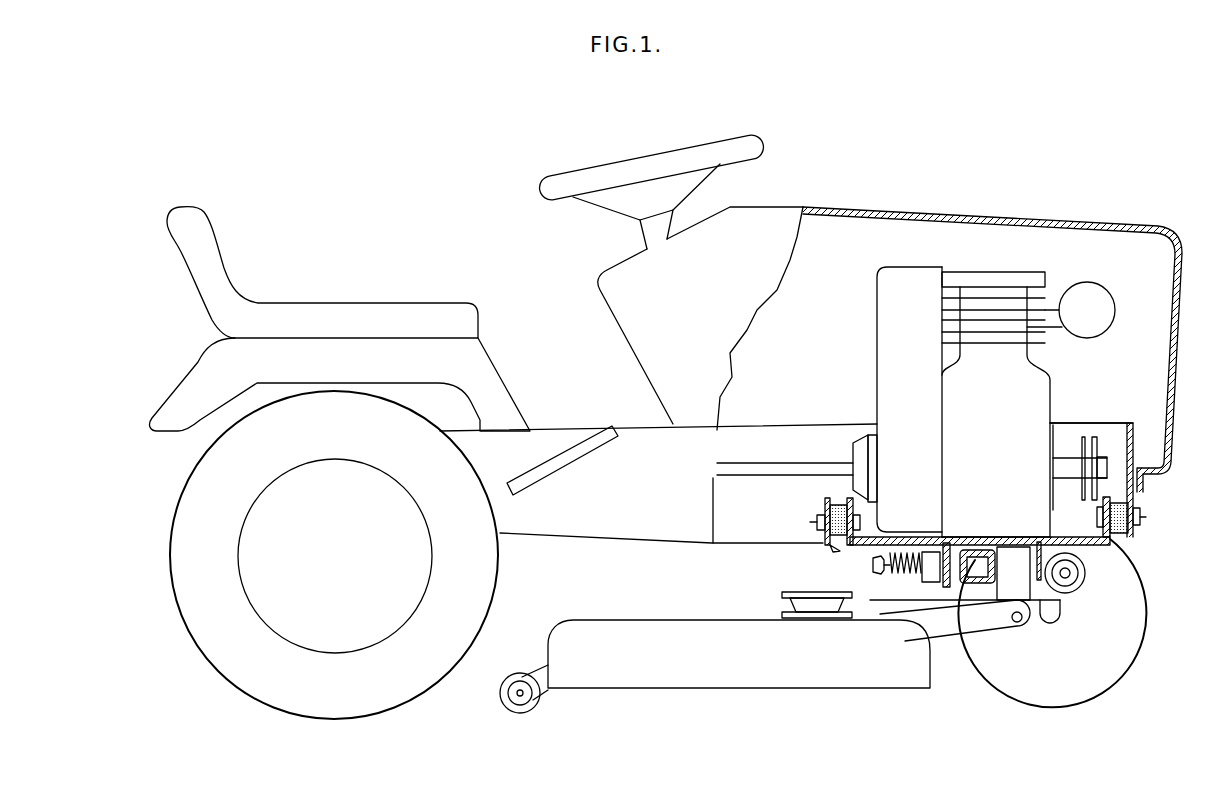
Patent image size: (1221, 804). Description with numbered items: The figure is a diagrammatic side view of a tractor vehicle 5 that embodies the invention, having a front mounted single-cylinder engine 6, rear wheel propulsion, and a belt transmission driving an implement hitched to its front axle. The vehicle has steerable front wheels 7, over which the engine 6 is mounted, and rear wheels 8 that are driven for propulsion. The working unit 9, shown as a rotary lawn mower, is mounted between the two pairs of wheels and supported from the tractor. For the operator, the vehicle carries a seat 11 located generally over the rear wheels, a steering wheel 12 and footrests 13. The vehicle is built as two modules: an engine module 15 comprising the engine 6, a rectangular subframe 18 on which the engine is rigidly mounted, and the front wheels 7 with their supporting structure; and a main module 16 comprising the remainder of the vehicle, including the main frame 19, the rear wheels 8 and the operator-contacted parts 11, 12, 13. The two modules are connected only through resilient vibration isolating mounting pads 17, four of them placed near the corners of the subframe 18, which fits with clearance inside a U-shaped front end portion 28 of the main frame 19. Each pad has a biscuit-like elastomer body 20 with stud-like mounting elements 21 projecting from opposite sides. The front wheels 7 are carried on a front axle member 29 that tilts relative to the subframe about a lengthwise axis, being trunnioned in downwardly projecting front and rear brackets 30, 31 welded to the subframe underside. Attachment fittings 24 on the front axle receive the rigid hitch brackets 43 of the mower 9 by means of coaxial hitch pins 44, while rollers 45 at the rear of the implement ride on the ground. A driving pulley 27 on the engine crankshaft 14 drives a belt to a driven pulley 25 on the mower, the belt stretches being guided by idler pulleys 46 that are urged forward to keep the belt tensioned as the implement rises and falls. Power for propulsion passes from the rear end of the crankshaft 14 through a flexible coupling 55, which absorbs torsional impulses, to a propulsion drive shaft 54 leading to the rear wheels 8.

The tractor vehicle 5 is at (996, 131).
The engine 6 is at (1002, 422).
The front wheels 7 is at (1133, 611).
The rear wheels 8 is at (182, 532).
The working unit 9 is at (722, 633).
The seat 11 is at (363, 301).
The steering wheel 12 is at (653, 148).
The footrests 13 is at (570, 437).
The crankshaft 14 is at (1065, 450).
The engine module 15 is at (858, 552).
The main module 16 is at (530, 316).
The resilient vibration isolating mounting pads 17 is at (840, 504).
The subframe 18 is at (993, 539).
The main frame 19 is at (647, 437).
The biscuit-like body 20 is at (835, 545).
The stud-like mounting elements 21 is at (817, 521).
The attachment fittings 24 is at (1026, 582).
The driven pulley 25 is at (793, 593).
The driving pulley 27 is at (1093, 447).
The U-shaped front end portion 28 is at (1137, 532).
The front axle member 29 is at (977, 550).
The front bracket 30 is at (1040, 540).
The rear bracket 31 is at (947, 583).
The hitch brackets 43 is at (985, 627).
The hitch pins 44 is at (1027, 622).
The rollers 45 is at (503, 687).
The idler pulleys 46 is at (1085, 583).
The propulsion drive shaft 54 is at (802, 463).
The flexible coupling 55 is at (860, 440).